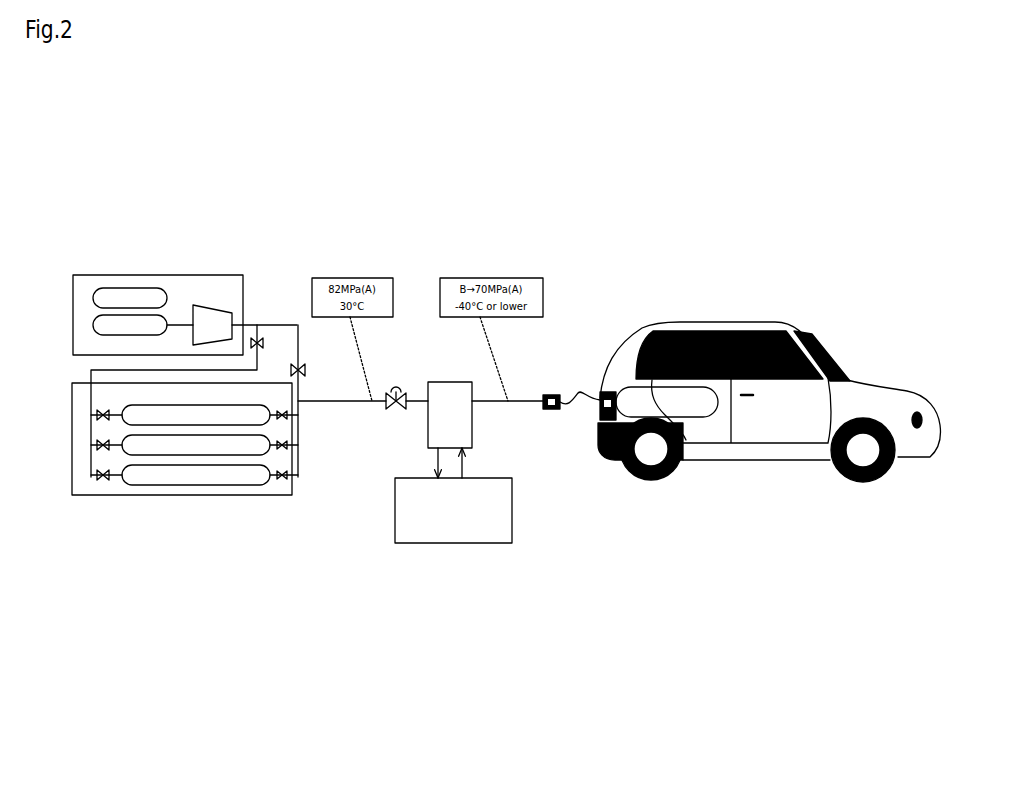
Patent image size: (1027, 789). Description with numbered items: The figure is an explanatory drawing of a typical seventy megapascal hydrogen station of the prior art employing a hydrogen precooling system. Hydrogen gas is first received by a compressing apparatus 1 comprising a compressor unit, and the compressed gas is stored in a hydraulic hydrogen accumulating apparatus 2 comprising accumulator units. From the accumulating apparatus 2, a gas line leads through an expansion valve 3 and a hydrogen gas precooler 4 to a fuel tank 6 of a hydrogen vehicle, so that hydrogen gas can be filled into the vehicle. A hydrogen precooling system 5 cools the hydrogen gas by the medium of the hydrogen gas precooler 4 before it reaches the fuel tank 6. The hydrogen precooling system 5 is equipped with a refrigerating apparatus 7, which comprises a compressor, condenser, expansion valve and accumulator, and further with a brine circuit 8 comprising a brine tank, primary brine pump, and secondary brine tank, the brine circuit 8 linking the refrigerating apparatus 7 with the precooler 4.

The compressing apparatus 1 is at (212, 265).
The hydraulic hydrogen accumulating apparatus 2 is at (107, 487).
The expansion valve 3 is at (398, 378).
The hydrogen gas precooler 4 is at (478, 388).
The hydrogen precooling system 5 is at (530, 565).
The fuel tank 6 is at (690, 423).
The refrigerating apparatus 7 is at (390, 493).
The brine circuit 8 is at (463, 462).